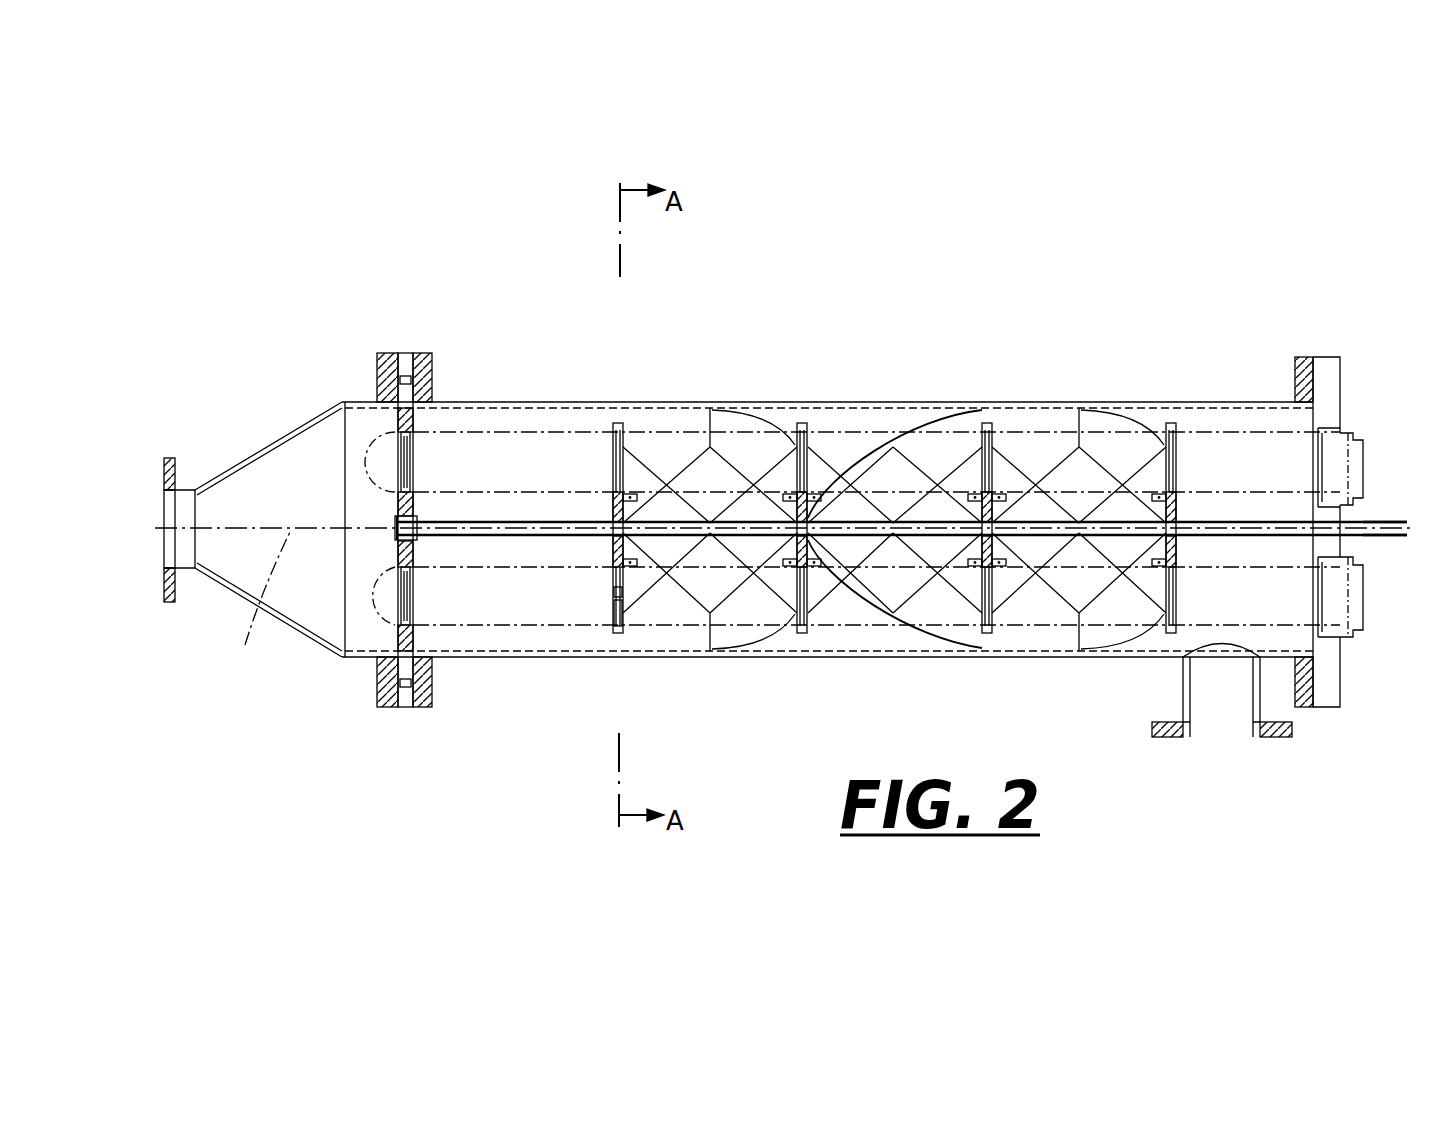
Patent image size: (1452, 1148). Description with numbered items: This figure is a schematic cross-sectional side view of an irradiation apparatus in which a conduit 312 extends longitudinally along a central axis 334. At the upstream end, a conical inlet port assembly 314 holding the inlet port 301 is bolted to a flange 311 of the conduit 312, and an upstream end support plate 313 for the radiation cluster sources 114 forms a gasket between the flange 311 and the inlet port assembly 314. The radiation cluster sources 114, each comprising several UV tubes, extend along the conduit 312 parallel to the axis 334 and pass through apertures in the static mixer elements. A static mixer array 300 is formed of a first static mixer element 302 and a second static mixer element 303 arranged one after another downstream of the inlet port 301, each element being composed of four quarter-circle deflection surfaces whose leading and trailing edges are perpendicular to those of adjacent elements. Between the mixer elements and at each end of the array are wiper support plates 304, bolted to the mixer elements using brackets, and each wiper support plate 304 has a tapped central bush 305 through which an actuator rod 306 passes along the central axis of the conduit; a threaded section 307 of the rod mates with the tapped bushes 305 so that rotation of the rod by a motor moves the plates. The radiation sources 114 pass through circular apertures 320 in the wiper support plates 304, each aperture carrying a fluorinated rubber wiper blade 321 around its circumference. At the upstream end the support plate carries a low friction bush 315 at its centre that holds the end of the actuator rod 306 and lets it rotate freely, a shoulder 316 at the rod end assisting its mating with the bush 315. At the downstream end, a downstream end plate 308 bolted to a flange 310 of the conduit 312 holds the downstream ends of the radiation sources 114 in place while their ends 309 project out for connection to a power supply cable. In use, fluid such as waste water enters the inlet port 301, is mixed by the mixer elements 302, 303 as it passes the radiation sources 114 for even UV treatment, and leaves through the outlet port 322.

The inlet port 301 is at (160, 496).
The conical inlet port assembly 314 is at (262, 445).
The low friction bush 315 is at (393, 515).
The upstream end support plate 313 is at (403, 352).
The flange 311 is at (415, 352).
The conduit 312 is at (537, 402).
The radiation cluster source 114 is at (578, 447).
The wiper support plate 304 is at (621, 423).
The first static mixer element 302 is at (734, 410).
The static mixer array 300 is at (888, 465).
The second static mixer element 303 is at (948, 410).
The tapped central bush 305 is at (620, 525).
The flange 310 is at (1305, 356).
The downstream end plate 308 is at (1347, 432).
The threaded section 307 is at (1178, 525).
The actuator rod 306 is at (1386, 530).
The ends of the radiation sources 309 is at (1365, 603).
The central axis 334 is at (243, 602).
The shoulder 316 is at (420, 541).
The wiper blade 321 is at (612, 593).
The circular aperture 320 is at (623, 590).
The outlet port 322 is at (1210, 738).